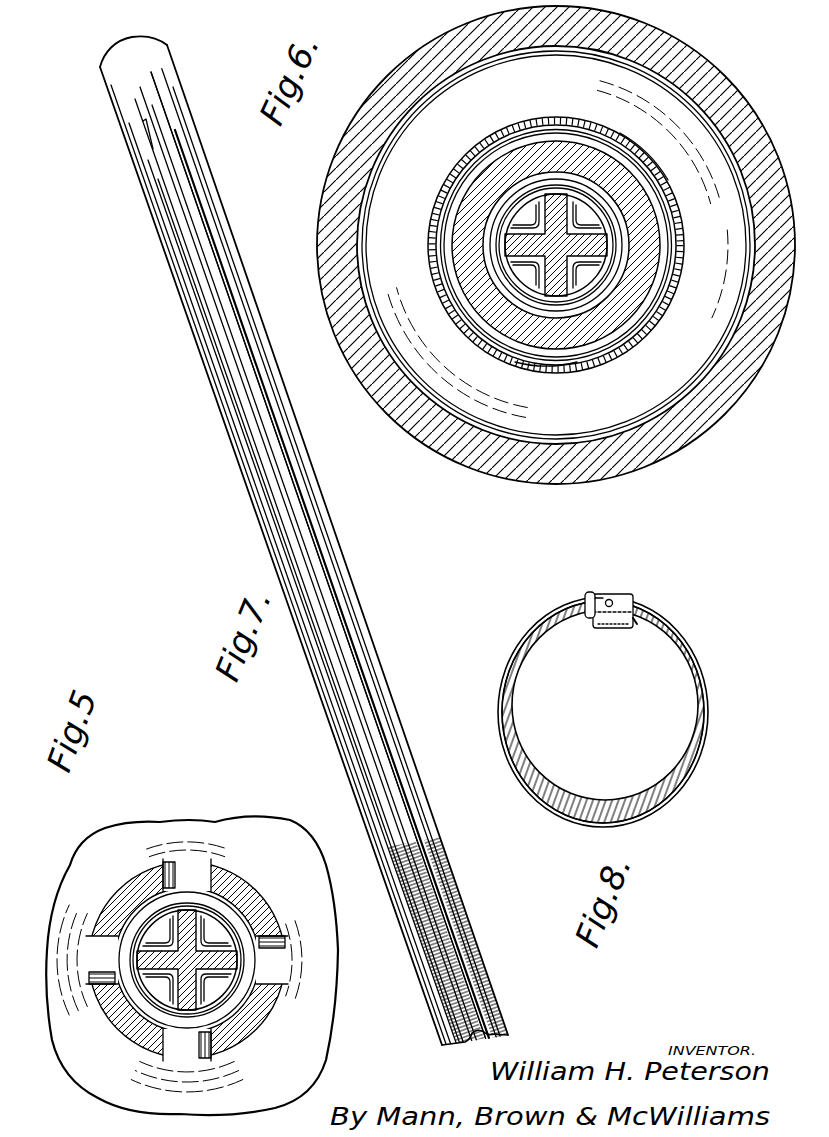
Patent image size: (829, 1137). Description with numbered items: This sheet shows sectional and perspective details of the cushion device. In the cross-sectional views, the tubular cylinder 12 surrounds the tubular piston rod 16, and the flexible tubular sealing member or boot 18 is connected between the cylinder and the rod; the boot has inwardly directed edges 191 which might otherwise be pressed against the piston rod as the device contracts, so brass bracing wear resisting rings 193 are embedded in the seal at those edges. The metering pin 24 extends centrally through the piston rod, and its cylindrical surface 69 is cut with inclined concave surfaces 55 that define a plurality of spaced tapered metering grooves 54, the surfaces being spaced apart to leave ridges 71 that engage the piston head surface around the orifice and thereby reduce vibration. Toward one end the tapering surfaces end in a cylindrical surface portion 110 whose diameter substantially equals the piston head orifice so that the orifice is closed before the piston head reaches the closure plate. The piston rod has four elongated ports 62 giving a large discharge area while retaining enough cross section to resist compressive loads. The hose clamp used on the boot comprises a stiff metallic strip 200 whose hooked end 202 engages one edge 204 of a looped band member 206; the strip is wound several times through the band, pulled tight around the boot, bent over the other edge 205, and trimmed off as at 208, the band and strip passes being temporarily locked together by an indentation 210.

In FIG. 6, the tubular cylinder 12 is at (323, 170).
In FIG. 6, the tubular piston rod 16 is at (449, 262).
In FIG. 5, the tubular piston rod 16 is at (238, 860).
In FIG. 6, the flexible tubular sealing member or boot 18 is at (435, 181).
In FIG. 5, the metering pin 24 is at (226, 998).
In FIG. 7, the metering pin 24 is at (344, 549).
In FIG. 6, the tapered metering grooves 54 is at (586, 276).
In FIG. 5, the tapered metering grooves 54 is at (152, 924).
In FIG. 7, the tapered metering grooves 54 is at (366, 786).
In FIG. 6, the concave surfaces 55 is at (583, 200).
In FIG. 5, the concave surfaces 55 is at (160, 912).
In FIG. 7, the concave surfaces 55 is at (394, 720).
In FIG. 5, the ports 62 is at (184, 888).
In FIG. 7, the cylindrical surface 69 is at (150, 188).
In FIG. 6, the ridges 71 is at (506, 246).
In FIG. 5, the ridges 71 is at (139, 960).
In FIG. 7, the ridges 71 is at (378, 848).
In FIG. 7, the cylindrical surface portion 110 is at (133, 100).
In FIG. 6, the inwardly directed edges 191 is at (650, 160).
In FIG. 6, the bracing wear resisting rings 193 is at (562, 372).
In FIG. 8, the stiff metallic strip 200 is at (643, 812).
In FIG. 8, the hooked end 202 is at (635, 628).
In FIG. 8, the edge of band member 204 is at (614, 629).
In FIG. 8, the other edge of band member 205 is at (589, 620).
In FIG. 8, the looped band member 206 is at (618, 594).
In FIG. 8, the trimmed end 208 is at (596, 594).
In FIG. 8, the indentation 210 is at (607, 592).